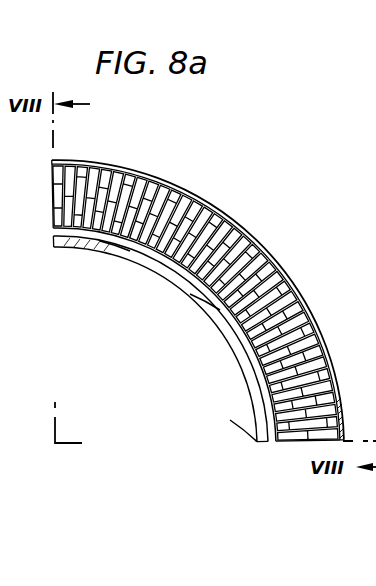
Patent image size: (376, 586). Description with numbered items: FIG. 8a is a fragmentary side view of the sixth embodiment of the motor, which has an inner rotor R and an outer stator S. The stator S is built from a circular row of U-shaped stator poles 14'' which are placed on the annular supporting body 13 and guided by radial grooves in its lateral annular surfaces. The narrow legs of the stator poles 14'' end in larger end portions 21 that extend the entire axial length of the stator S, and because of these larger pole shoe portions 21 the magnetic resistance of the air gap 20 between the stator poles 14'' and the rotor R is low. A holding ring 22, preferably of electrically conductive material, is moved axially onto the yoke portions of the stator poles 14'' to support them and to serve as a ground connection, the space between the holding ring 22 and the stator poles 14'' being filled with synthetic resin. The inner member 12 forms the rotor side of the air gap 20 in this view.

The inner shell 12 is at (258, 408).
The lining layer 13 is at (124, 247).
The stator poles 14'' is at (196, 302).
The air gap 20 is at (253, 352).
The end portions 21 is at (212, 303).
The holding ring 22 is at (213, 201).
The rotor R is at (172, 285).
The stator S is at (163, 181).